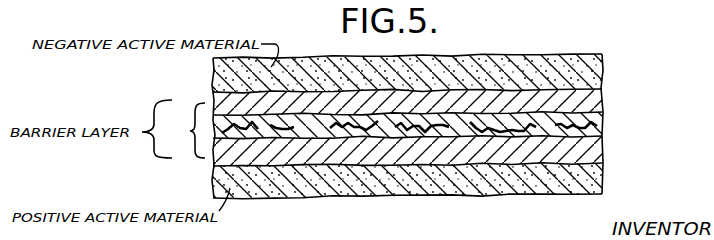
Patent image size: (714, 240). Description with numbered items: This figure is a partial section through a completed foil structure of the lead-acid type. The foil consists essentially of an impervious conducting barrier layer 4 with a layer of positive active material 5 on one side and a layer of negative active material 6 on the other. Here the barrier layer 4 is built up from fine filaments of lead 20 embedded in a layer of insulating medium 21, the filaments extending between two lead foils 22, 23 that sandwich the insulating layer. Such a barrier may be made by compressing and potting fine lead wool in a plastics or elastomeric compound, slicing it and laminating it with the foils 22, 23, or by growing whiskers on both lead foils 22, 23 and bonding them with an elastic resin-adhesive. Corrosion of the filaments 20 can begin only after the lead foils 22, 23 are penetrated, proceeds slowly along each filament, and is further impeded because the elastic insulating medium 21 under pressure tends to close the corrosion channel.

The barrier layer 4 is at (173, 129).
The layer of positive active material 5 is at (460, 185).
The layer of negative active material 6 is at (602, 74).
The fine filaments of lead 20 is at (348, 140).
The layer of insulating medium 21 is at (285, 138).
The lead foil 22 is at (212, 94).
The lead foil 23 is at (213, 162).